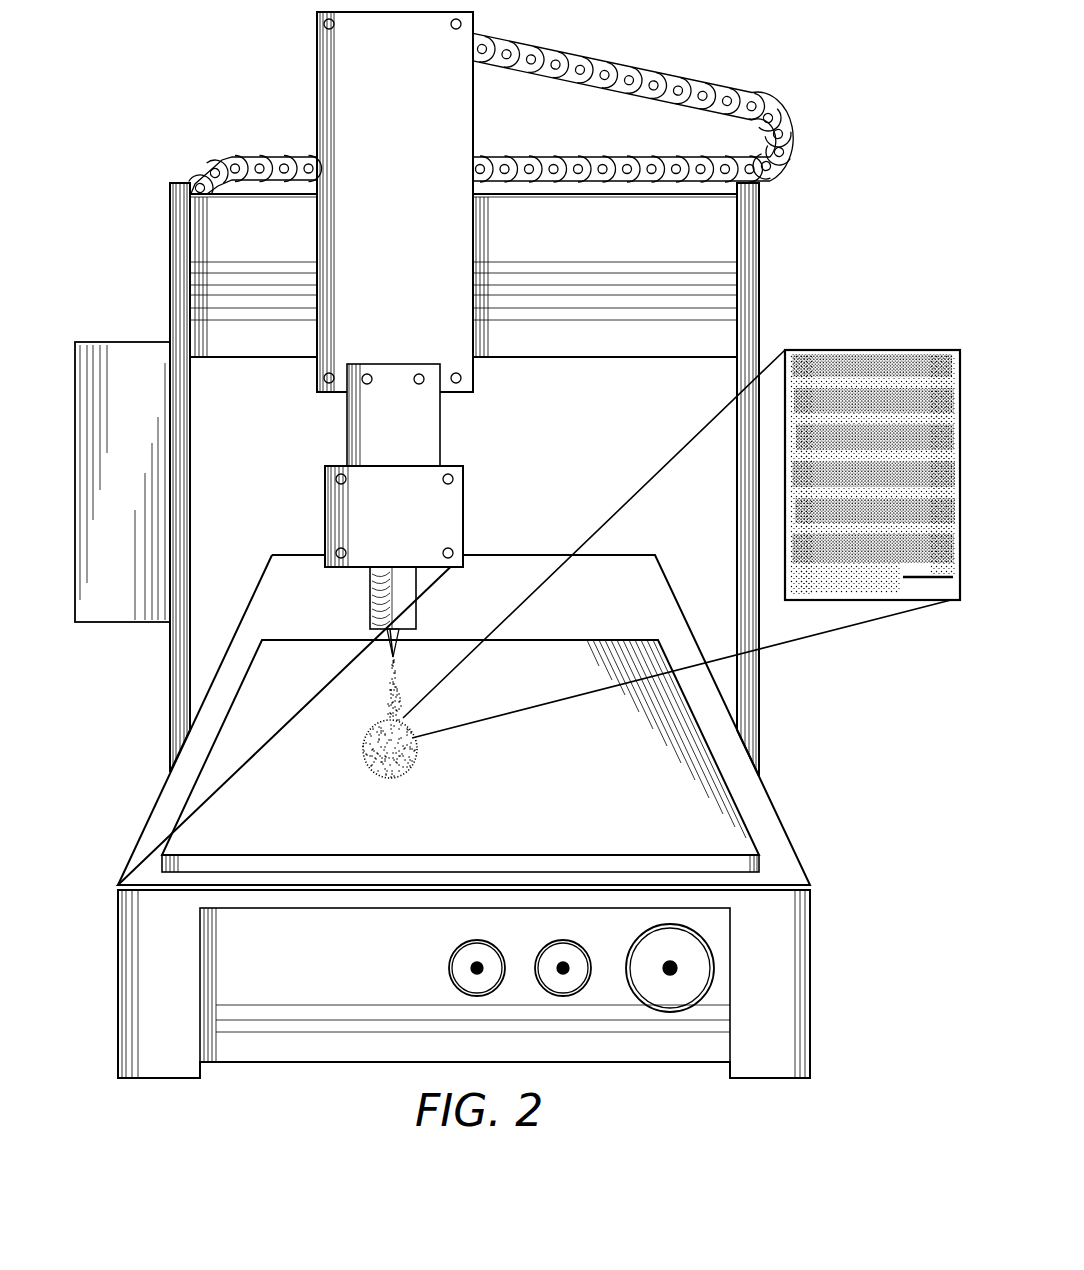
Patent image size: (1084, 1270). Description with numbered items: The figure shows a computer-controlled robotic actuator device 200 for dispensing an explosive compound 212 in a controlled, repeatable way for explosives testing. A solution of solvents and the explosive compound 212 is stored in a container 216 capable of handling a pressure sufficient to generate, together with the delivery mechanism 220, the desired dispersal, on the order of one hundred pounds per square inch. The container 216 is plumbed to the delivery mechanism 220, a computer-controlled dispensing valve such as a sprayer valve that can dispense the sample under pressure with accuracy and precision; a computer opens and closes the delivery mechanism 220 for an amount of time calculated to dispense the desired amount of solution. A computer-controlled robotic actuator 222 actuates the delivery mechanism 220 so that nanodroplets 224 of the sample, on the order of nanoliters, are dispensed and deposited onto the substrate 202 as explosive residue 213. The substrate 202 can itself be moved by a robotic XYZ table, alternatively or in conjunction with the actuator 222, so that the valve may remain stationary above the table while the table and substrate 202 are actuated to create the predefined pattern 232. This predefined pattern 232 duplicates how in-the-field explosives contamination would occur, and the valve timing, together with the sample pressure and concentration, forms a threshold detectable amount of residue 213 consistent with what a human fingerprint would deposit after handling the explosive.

The computer-controlled robotic actuator device 200 is at (862, 115).
The substrate 202 is at (190, 820).
The explosive compound 212 is at (383, 712).
The explosive residue 213 is at (878, 354).
The container 216 is at (115, 343).
The delivery mechanism 220 is at (402, 637).
The computer-controlled robotic actuator 222 is at (458, 505).
The nanodroplets 224 is at (384, 676).
The predefined pattern 232 is at (367, 766).